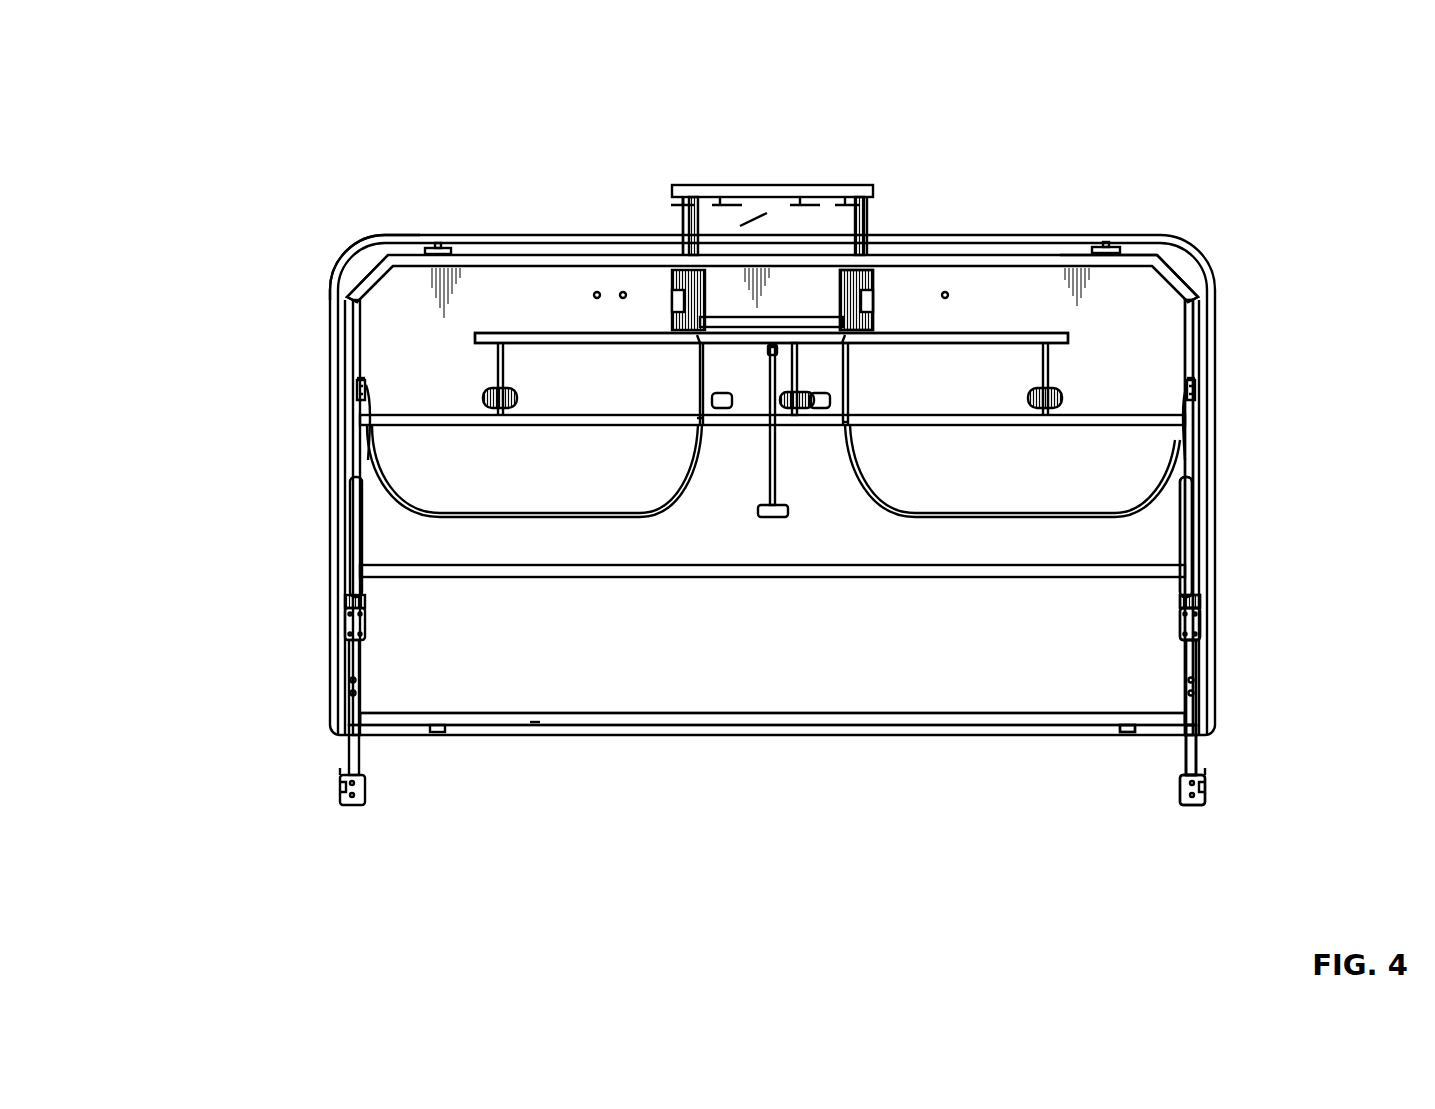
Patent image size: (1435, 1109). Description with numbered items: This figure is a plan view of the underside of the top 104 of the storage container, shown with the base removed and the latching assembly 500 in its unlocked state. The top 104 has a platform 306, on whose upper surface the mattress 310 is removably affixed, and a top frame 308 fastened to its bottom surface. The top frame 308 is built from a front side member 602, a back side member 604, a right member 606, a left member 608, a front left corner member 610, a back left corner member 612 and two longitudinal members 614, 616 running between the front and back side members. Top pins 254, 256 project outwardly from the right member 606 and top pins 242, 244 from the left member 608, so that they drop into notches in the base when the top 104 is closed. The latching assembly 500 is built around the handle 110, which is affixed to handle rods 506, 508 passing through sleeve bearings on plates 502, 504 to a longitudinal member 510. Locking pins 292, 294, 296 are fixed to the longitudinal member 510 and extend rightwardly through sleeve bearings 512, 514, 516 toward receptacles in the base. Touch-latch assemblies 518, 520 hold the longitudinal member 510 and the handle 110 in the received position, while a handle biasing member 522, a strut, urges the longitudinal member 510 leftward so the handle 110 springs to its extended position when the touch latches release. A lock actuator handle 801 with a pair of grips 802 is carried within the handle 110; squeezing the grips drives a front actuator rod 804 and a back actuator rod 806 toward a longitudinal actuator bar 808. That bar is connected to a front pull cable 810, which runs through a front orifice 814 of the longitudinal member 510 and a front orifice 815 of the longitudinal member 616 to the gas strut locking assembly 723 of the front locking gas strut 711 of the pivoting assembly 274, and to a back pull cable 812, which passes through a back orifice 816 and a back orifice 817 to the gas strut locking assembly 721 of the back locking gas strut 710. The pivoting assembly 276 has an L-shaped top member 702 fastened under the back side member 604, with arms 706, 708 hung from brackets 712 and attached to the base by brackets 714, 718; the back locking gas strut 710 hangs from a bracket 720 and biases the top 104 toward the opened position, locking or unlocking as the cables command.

The top 104 is at (297, 821).
The handle 110 is at (872, 207).
The top pin 242 is at (438, 245).
The top pin 244 is at (1108, 247).
The top pin 254 is at (437, 732).
The top pin 256 is at (1128, 732).
The pivoting assembly 274 is at (261, 603).
The pivoting assembly 276 is at (1274, 577).
The locking pin 292 is at (497, 367).
The locking pin 294 is at (797, 372).
The locking pin 296 is at (1165, 262).
The platform 306 is at (772, 570).
The top frame 308 is at (680, 736).
The mattress 310 is at (520, 243).
The latching assembly 500 is at (894, 296).
The plate 502 is at (673, 297).
The plate 504 is at (870, 320).
The handle rod 506 is at (688, 215).
The handle rod 508 is at (862, 270).
The longitudinal member 510 is at (487, 333).
The sleeve bearing 512 is at (483, 397).
The sleeve bearing 514 is at (826, 400).
The sleeve bearing 516 is at (1060, 392).
The touch-latch assembly 518 is at (691, 378).
The touch-latch assembly 520 is at (854, 383).
The handle biasing member 522 is at (771, 517).
The front side member 602 is at (343, 307).
The back side member 604 is at (1193, 313).
The right member 606 is at (535, 725).
The left member 608 is at (1088, 255).
The front left corner member 610 is at (367, 282).
The back left corner member 612 is at (1190, 290).
The longitudinal member 614 is at (430, 578).
The longitudinal member 616 is at (357, 386).
The top member 702 is at (1196, 665).
The arm 706 is at (1199, 745).
The arm 708 is at (1199, 598).
The locking gas strut 710 is at (1197, 563).
The locking gas strut 711 is at (357, 520).
The bracket 712 is at (1199, 720).
The bracket 714 is at (1229, 797).
The bracket 718 is at (1199, 618).
The bracket 720 is at (1210, 368).
The gas strut locking assembly 721 is at (1219, 388).
The gas strut locking assembly 723 is at (333, 383).
The handle 801 is at (715, 240).
The pair of grips 802 is at (837, 207).
The front actuator rod 804 is at (745, 225).
The back actuator rod 806 is at (823, 203).
The longitudinal actuator bar 808 is at (817, 310).
The front pull cable 810 is at (597, 520).
The back pull cable 812 is at (1075, 520).
The front orifice 814 is at (697, 343).
The front orifice 815 is at (697, 420).
The back orifice 816 is at (850, 340).
The back orifice 817 is at (870, 427).